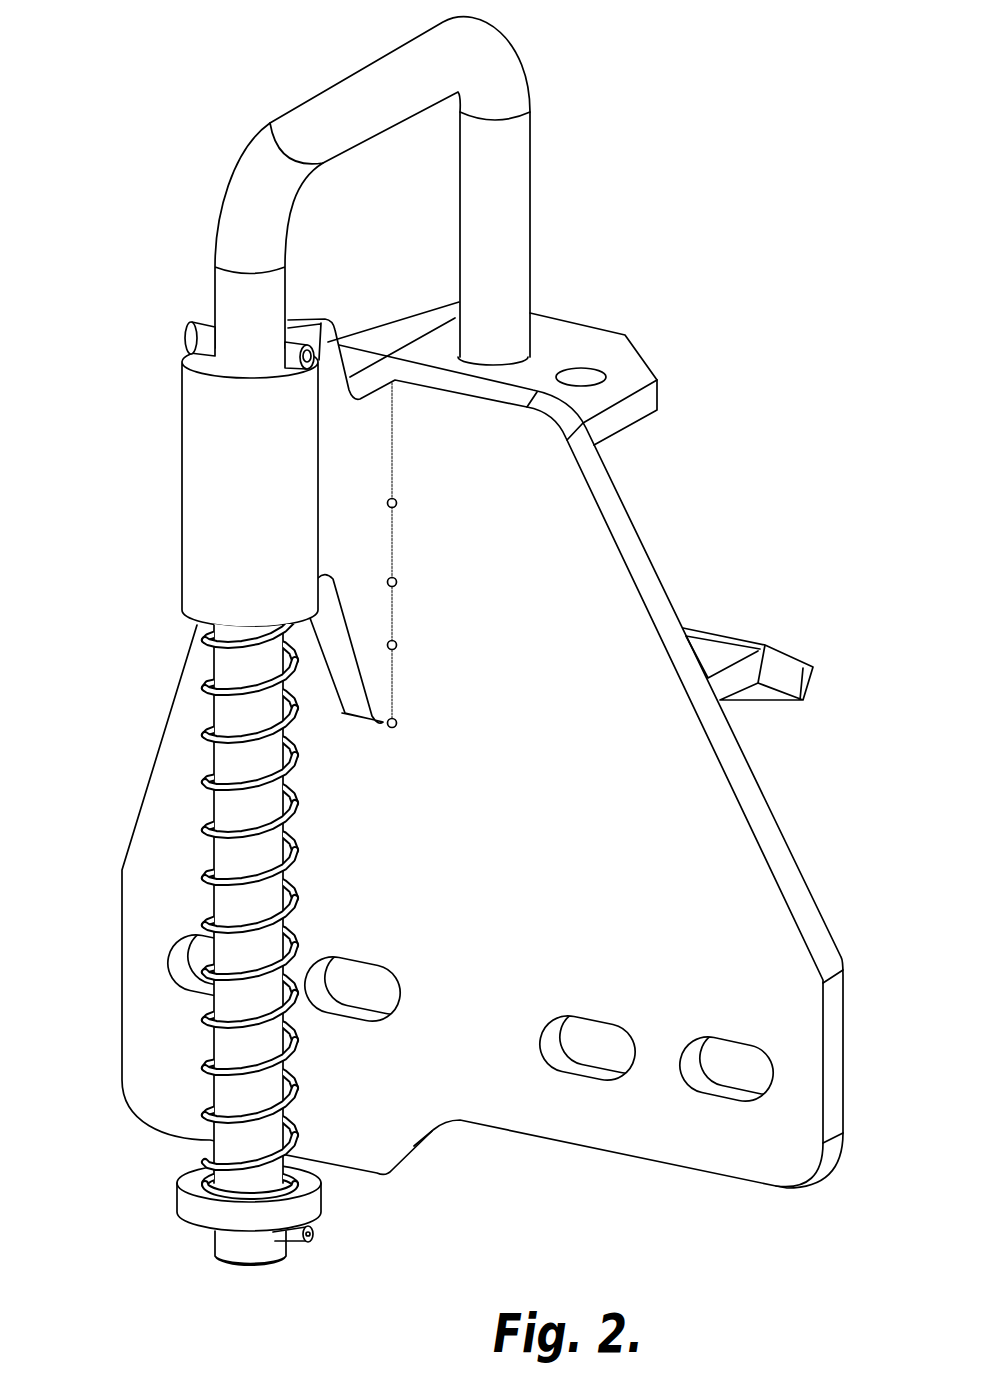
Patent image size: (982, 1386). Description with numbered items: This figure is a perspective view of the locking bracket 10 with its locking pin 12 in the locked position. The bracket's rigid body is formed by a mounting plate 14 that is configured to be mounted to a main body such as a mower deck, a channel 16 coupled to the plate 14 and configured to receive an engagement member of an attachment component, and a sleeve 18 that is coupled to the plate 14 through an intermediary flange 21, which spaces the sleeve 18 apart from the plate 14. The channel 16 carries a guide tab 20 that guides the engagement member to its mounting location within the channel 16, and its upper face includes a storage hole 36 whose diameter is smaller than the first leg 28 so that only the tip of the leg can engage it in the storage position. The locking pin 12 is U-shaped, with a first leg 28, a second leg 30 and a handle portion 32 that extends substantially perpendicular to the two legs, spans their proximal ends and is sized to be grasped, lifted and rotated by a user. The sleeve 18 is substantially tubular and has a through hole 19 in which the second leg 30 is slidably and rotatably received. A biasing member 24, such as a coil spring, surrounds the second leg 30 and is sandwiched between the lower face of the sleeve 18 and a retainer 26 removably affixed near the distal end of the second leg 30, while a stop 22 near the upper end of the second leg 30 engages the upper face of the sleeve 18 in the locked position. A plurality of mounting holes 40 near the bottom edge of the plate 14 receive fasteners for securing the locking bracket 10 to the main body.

The locking bracket 10 is at (706, 46).
The locking pin 12 is at (389, 182).
The mounting plate 14 is at (464, 715).
The channel 16 is at (528, 343).
The sleeve 18 is at (193, 473).
The through hole 19 is at (208, 355).
The guide tab 20 is at (787, 670).
The intermediary flange 21 is at (367, 545).
The stop 22 is at (197, 332).
The biasing member 24 is at (292, 806).
The retainer 26 is at (197, 1215).
The first leg 28 is at (507, 168).
The second leg 30 is at (235, 763).
The handle portion 32 is at (387, 72).
The storage hole 36 is at (603, 370).
The mounting holes 40 is at (177, 957).